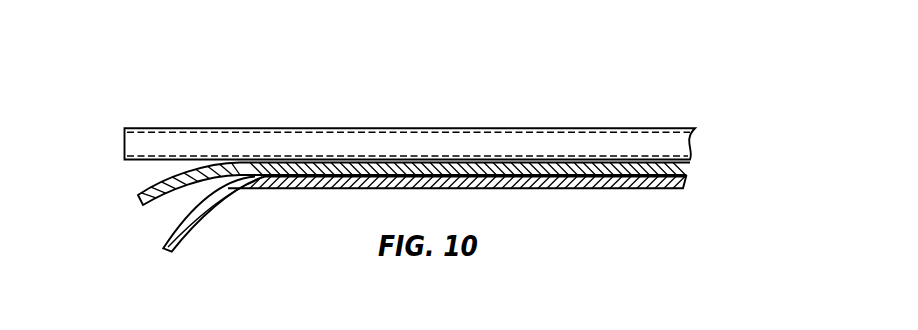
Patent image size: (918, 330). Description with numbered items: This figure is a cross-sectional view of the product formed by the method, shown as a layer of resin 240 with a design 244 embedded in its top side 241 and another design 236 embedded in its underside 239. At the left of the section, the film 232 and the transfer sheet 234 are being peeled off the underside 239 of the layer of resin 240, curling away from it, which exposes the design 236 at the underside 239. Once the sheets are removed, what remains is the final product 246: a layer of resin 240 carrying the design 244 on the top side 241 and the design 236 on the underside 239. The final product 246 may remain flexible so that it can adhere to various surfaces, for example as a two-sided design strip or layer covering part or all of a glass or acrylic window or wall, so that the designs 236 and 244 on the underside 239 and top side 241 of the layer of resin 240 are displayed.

The film 232 is at (204, 207).
The transfer sheet 234 is at (140, 197).
The design 236 is at (143, 160).
The underside 239 is at (160, 162).
The layer of resin 240 is at (124, 143).
The top side 241 is at (517, 128).
The design 244 is at (367, 132).
The final product 246 is at (718, 191).